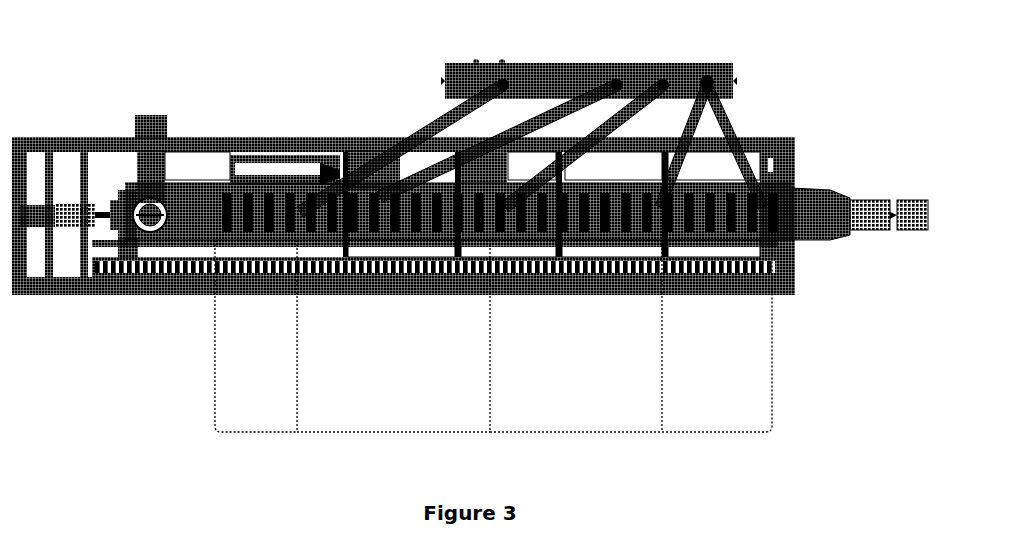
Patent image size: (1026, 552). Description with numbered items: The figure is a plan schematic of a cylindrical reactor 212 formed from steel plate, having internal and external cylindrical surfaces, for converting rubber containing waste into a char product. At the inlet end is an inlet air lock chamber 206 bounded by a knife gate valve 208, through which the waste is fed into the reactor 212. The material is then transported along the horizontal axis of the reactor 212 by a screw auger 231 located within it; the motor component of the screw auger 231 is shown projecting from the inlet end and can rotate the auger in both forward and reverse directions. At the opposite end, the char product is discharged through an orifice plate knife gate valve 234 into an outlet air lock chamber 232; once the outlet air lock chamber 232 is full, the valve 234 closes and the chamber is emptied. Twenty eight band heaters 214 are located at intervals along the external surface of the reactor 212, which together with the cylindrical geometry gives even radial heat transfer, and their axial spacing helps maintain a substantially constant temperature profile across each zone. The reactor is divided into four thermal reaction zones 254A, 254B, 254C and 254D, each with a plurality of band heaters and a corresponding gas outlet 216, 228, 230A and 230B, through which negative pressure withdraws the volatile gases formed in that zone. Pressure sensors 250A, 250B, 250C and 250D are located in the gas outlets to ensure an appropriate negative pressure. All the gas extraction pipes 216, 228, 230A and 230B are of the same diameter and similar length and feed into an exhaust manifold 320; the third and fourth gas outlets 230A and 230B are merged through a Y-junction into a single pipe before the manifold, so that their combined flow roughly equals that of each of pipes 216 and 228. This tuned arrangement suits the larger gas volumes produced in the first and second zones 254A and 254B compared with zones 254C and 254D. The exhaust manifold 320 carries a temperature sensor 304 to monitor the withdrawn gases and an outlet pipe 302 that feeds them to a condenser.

The inlet air lock chamber 206 is at (133, 188).
The knife gate valve 208 is at (151, 148).
The cylindrical reactor 212 is at (252, 168).
The band heaters 214 is at (262, 242).
The gas outlet 216 is at (498, 141).
The gas outlet 228 is at (583, 145).
The third gas outlet 230A is at (680, 146).
The fourth gas outlet 230B is at (735, 146).
The screw auger 231 is at (69, 205).
The outlet air lock chamber 232 is at (841, 221).
The orifice plate knife gate valve 234 is at (909, 205).
The pressure sensor 250A is at (550, 63).
The pressure sensor 250B is at (610, 63).
The pressure sensor 250C is at (640, 63).
The pressure sensor 250D is at (690, 61).
The first thermal reaction zone 254A is at (257, 432).
The second thermal reaction zone 254B is at (393, 432).
The third thermal reaction zone 254C is at (577, 432).
The fourth thermal reaction zone 254D is at (718, 432).
The outlet pipe 302 is at (452, 116).
The temperature sensor 304 is at (695, 63).
The exhaust manifold 320 is at (589, 68).